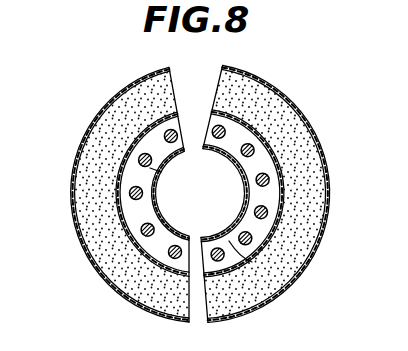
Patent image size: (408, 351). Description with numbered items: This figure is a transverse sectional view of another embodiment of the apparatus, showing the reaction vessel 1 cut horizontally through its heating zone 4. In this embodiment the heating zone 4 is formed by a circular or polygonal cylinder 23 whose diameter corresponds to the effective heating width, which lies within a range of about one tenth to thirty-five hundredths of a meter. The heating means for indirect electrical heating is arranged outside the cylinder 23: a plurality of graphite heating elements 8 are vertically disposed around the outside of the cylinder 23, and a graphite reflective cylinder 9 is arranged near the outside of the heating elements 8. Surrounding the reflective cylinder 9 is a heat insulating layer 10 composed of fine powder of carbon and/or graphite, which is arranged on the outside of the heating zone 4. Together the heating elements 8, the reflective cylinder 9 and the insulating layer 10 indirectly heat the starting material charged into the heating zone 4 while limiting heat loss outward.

The reaction vessel 1 is at (294, 71).
The heating zone 4 is at (206, 206).
The graphite heating elements 8 is at (140, 155).
The graphite reflective cylinder 9 is at (120, 220).
The heat insulating layer 10 is at (123, 265).
The circular or polygonal cylinder 23 is at (150, 168).